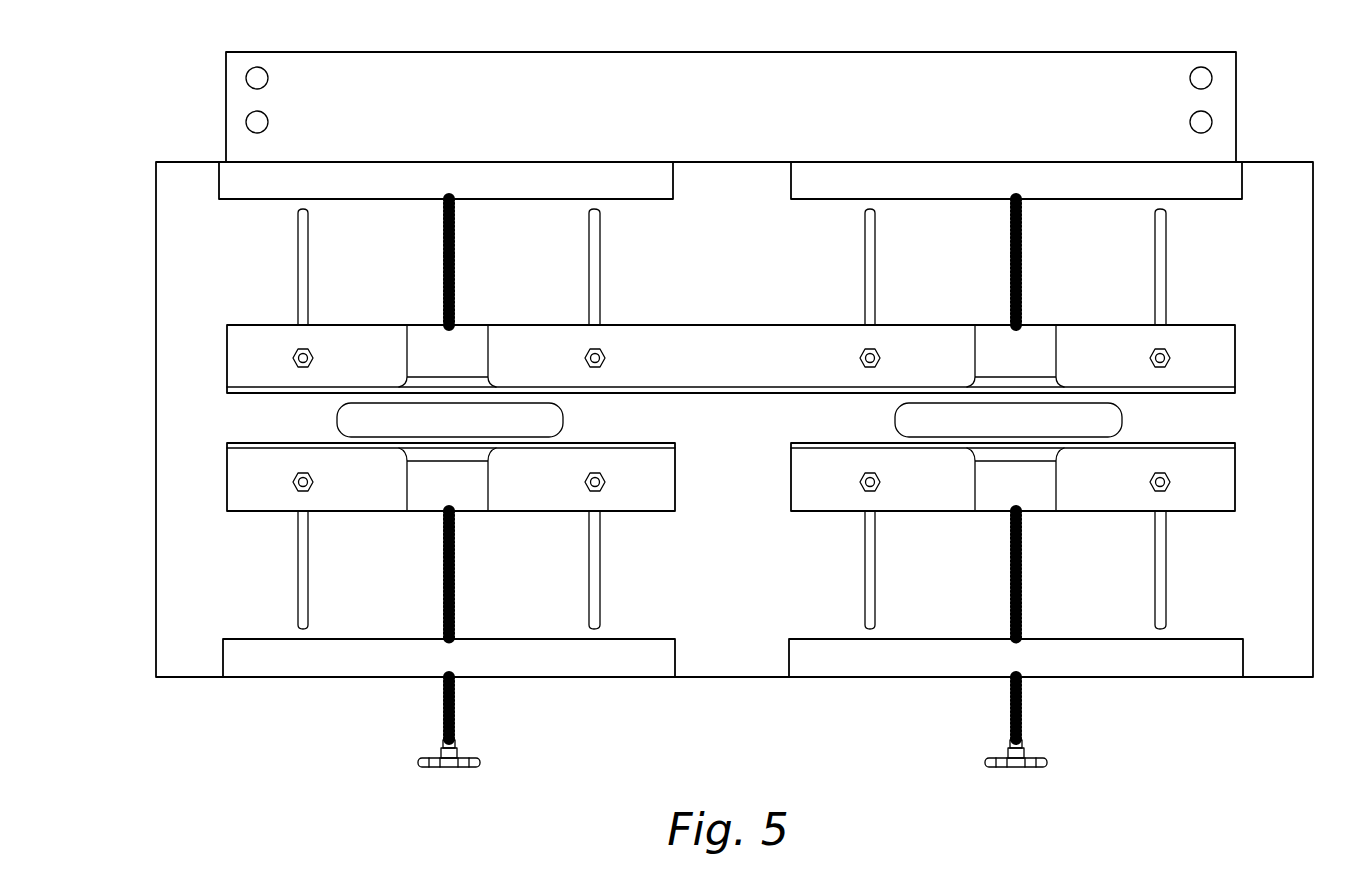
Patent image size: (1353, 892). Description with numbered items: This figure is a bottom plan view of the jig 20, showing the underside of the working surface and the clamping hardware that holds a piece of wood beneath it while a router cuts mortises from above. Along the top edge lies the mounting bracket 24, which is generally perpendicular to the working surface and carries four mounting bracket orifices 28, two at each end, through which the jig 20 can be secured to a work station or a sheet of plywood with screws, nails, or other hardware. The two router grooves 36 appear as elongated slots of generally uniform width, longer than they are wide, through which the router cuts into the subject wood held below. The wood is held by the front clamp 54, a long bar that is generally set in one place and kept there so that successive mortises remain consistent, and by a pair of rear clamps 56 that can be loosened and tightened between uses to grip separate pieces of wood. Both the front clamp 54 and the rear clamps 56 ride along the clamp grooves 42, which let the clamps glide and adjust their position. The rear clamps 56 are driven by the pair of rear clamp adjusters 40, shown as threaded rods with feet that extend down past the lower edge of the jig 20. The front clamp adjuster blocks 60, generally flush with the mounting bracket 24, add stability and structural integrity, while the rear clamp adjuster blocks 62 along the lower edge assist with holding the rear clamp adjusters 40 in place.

The jig 20 is at (304, 717).
The mounting bracket 24 is at (726, 116).
The mounting bracket orifices 28 is at (245, 121).
The router grooves 36 is at (560, 420).
The rear clamp adjusters 40 is at (457, 768).
The clamp grooves 42 is at (309, 250).
The front clamp 54 is at (711, 365).
The rear clamps 56 is at (434, 495).
The front clamp adjuster blocks 60 is at (505, 175).
The rear clamp adjuster blocks 62 is at (787, 656).